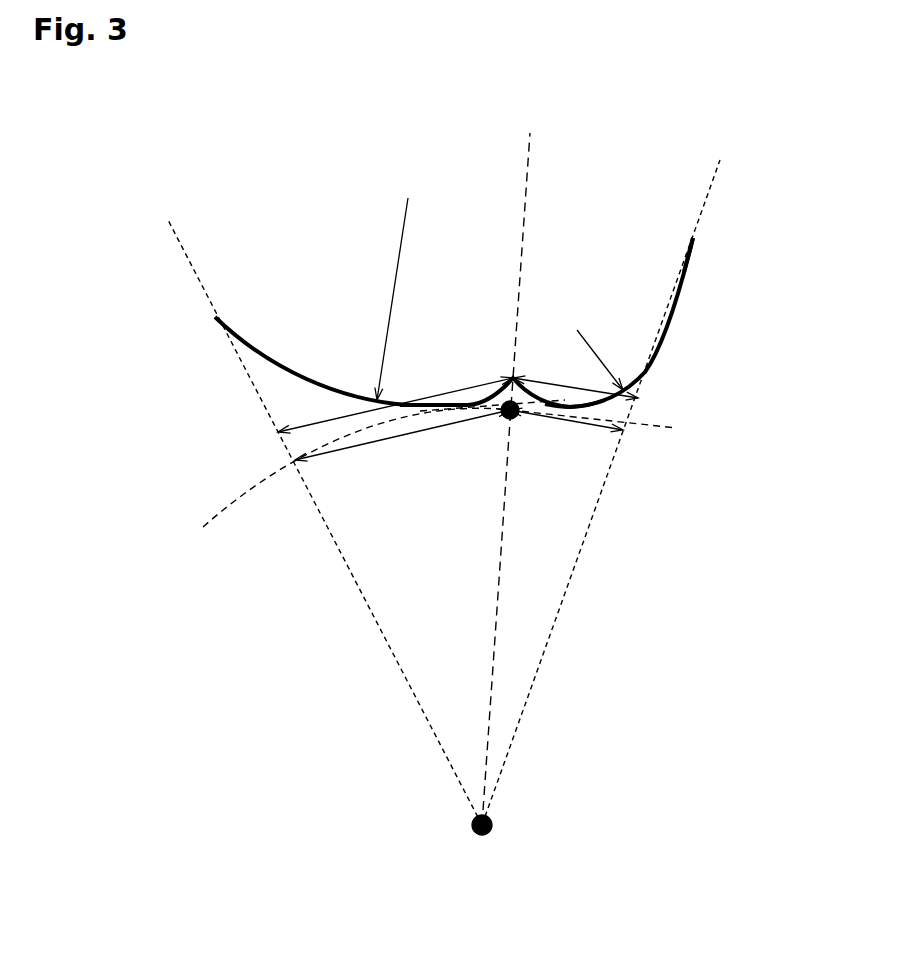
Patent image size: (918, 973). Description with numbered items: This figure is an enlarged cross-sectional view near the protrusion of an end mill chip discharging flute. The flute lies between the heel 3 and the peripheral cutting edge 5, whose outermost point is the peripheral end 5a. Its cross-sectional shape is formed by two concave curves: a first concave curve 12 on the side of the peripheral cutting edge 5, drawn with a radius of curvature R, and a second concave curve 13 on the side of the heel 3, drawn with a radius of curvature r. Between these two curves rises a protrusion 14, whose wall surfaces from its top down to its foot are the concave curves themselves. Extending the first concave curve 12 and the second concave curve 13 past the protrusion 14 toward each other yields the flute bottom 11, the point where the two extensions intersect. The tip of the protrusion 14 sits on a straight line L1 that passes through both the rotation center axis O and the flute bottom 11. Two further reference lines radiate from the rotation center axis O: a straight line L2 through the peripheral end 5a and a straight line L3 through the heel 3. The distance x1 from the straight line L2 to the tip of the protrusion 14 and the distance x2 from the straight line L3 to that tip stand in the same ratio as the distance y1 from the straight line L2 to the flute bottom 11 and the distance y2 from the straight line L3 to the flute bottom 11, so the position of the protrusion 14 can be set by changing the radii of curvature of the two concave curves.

The heel 3 is at (217, 318).
The peripheral cutting edge 5 is at (678, 302).
The peripheral end 5a is at (695, 240).
The flute bottom 11 is at (513, 418).
The first concave curve 12 is at (558, 400).
The second concave curve 13 is at (433, 405).
The protrusion 14 is at (513, 378).
The straight line L1 is at (526, 479).
The straight line L2 is at (601, 488).
The straight line L3 is at (324, 513).
The rotation center axis O is at (496, 827).
The radius of curvature r is at (389, 299).
The radius of curvature R is at (600, 360).
The distance x1 is at (575, 385).
The distance x2 is at (395, 405).
The distance y1 is at (566, 430).
The distance y2 is at (402, 442).